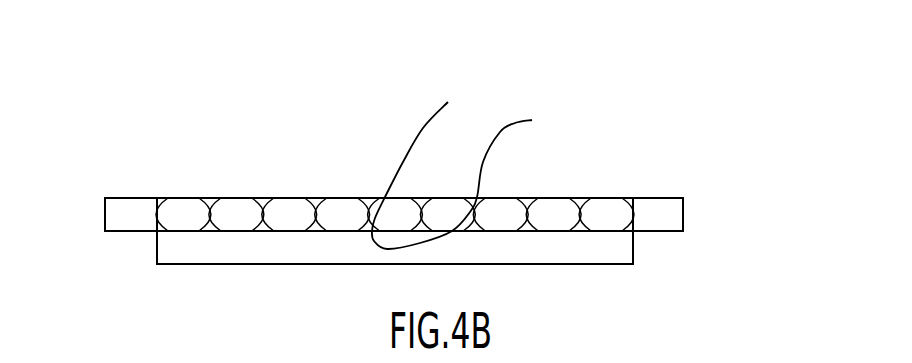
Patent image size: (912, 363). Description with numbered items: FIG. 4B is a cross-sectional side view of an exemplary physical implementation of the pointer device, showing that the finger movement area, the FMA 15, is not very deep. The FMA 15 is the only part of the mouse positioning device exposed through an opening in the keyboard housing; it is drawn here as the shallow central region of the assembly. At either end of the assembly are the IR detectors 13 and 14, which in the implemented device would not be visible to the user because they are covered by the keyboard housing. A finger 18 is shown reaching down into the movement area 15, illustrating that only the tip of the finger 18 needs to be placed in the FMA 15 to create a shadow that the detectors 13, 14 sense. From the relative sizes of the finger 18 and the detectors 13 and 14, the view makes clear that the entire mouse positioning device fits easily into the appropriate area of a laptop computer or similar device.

The IR detector 13 is at (700, 190).
The IR detector 14 is at (190, 188).
The finger movement area (FMA) 15 is at (563, 256).
The finger 18 is at (467, 170).